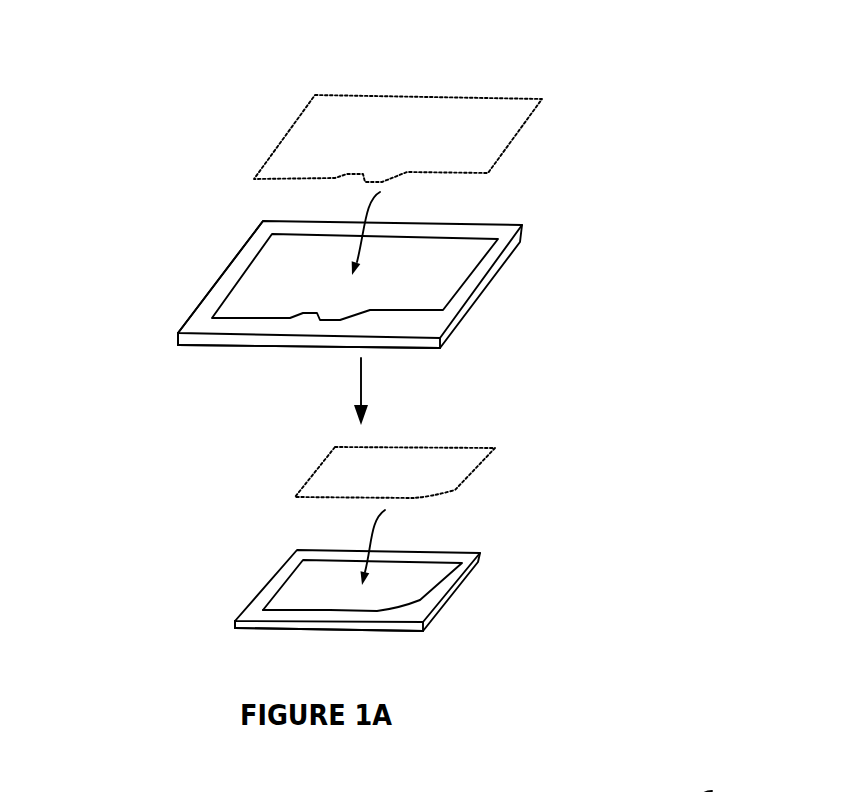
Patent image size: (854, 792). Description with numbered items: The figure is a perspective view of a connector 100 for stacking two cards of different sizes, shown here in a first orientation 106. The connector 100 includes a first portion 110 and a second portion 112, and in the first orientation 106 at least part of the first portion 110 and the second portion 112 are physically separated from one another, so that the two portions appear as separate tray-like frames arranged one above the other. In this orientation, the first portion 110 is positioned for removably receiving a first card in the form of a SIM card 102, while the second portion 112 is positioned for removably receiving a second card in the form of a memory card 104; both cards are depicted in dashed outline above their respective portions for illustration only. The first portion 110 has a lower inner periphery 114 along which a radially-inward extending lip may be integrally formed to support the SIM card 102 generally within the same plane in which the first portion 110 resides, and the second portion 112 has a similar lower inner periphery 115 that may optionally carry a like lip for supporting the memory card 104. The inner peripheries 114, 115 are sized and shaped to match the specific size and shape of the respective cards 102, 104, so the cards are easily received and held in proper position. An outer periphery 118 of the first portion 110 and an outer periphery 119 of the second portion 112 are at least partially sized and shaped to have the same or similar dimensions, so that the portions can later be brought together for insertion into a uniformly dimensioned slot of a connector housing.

The connector 100 is at (675, 82).
The SIM card 102 is at (482, 463).
The memory card 104 is at (597, 143).
The first orientation 106 is at (238, 578).
The first portion 110 is at (448, 598).
The second portion 112 is at (490, 282).
The inner periphery 114 is at (243, 268).
The inner periphery 115 is at (327, 608).
The outer periphery 118 is at (442, 343).
The outer periphery 119 is at (422, 630).